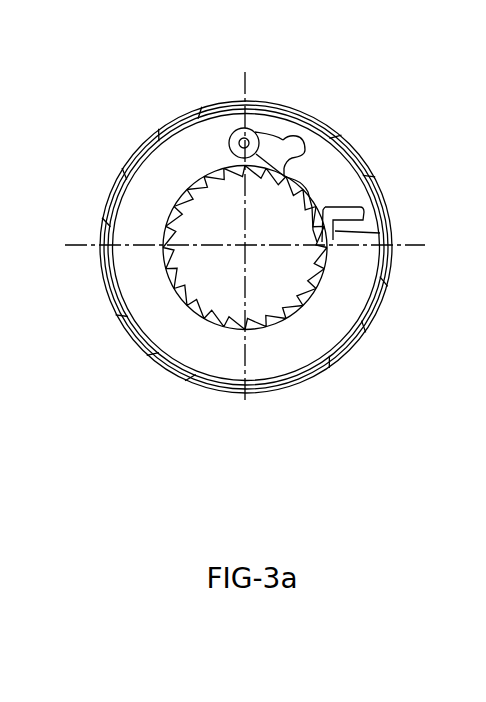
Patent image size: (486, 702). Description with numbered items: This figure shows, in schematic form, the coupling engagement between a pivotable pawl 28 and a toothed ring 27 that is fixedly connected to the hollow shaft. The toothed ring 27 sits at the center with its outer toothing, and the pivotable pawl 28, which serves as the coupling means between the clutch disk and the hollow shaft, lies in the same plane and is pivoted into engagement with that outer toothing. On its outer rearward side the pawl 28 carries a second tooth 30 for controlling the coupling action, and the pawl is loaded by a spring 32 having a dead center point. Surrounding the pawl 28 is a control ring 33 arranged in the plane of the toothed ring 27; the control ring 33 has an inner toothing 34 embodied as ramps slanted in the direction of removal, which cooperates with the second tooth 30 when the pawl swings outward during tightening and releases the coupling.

The toothed ring 27 is at (228, 270).
The pivotable pawl 28 is at (338, 144).
The second tooth 30 is at (292, 150).
The spring 32 is at (332, 200).
The control ring 33 is at (321, 375).
The inner toothing 34 is at (294, 378).